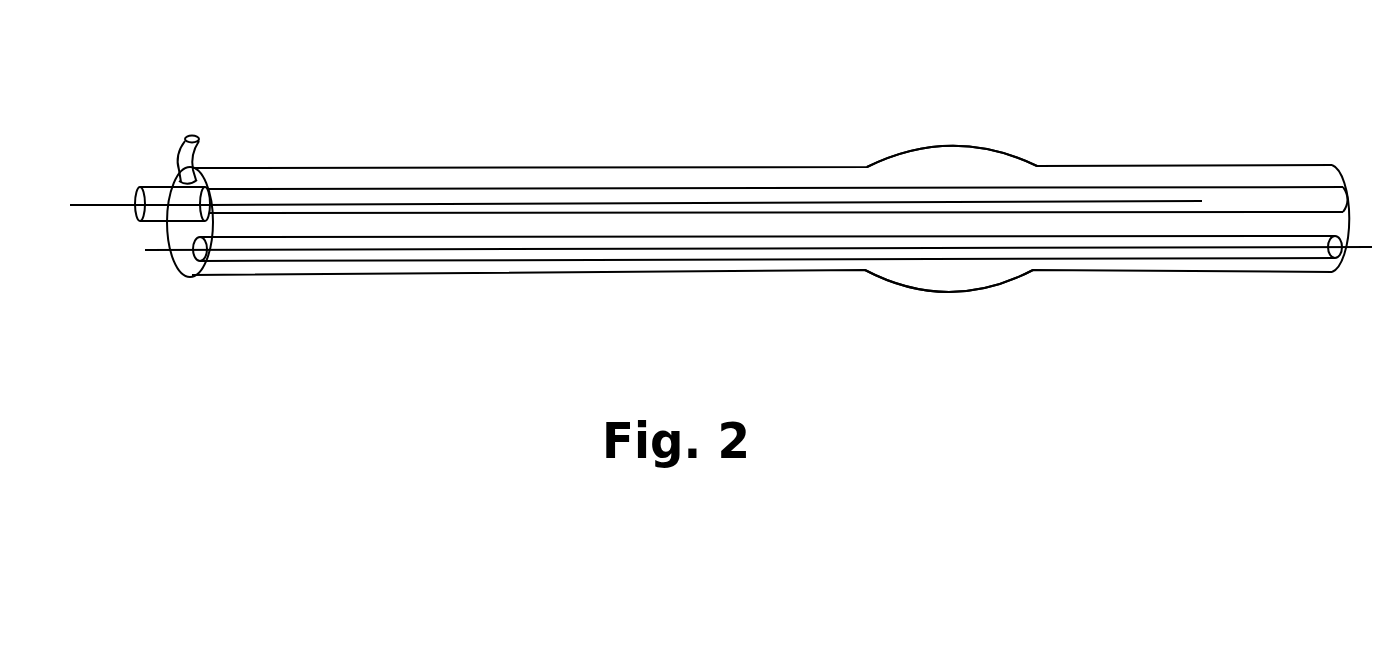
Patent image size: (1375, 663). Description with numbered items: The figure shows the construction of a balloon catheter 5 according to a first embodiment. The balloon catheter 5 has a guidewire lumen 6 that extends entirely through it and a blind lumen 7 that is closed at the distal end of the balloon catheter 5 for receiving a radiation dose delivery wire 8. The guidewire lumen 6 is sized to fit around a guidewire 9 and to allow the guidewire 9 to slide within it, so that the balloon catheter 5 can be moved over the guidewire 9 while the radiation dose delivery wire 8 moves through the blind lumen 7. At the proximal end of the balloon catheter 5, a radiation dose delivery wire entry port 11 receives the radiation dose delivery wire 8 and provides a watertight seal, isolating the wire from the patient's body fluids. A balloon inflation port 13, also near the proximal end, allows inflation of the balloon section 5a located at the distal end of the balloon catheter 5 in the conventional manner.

The balloon catheter 5 is at (674, 73).
The balloon section 5a is at (1033, 147).
The guidewire lumen 6 is at (410, 260).
The blind lumen 7 is at (497, 187).
The radiation dose delivery wire 8 is at (105, 203).
The guidewire 9 is at (157, 252).
The radiation dose delivery wire entry port 11 is at (157, 184).
The balloon inflation port 13 is at (202, 145).